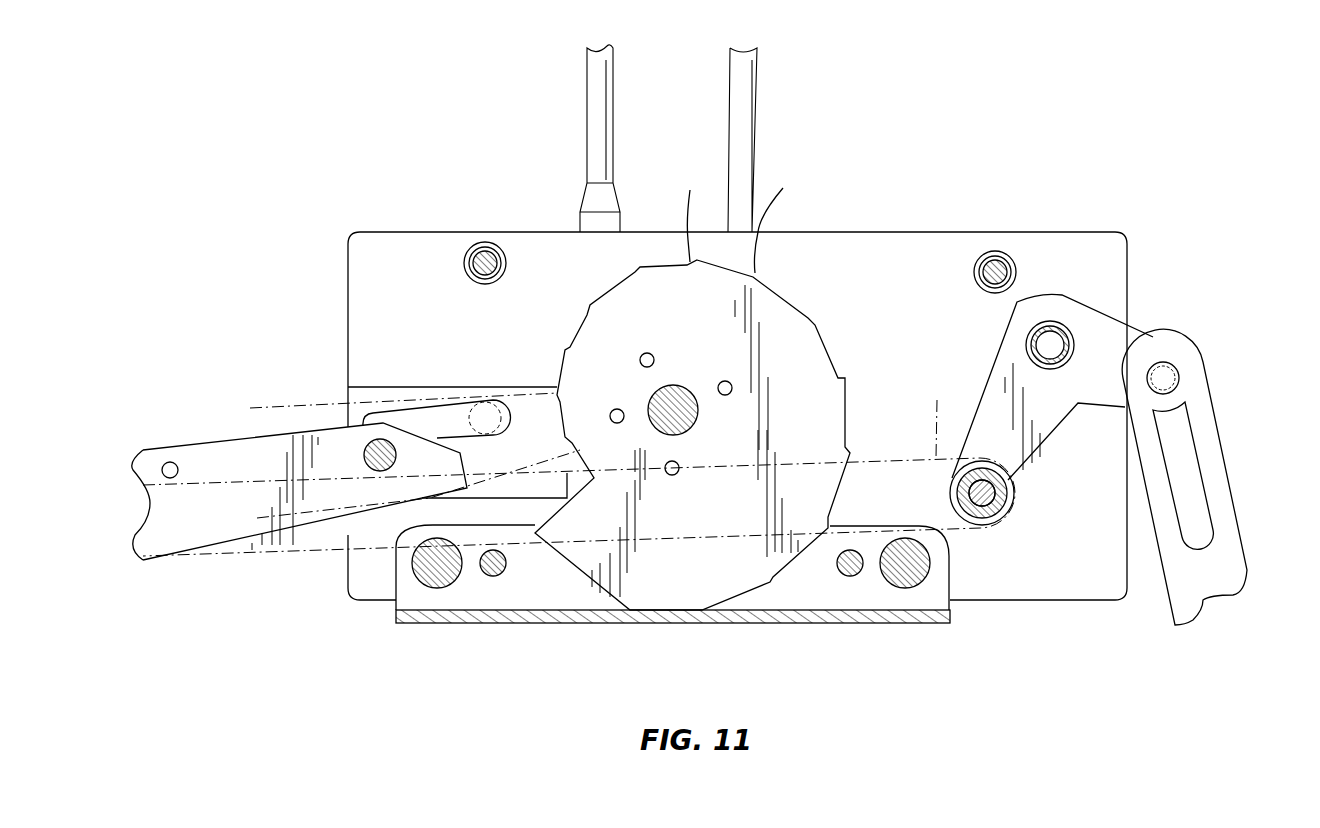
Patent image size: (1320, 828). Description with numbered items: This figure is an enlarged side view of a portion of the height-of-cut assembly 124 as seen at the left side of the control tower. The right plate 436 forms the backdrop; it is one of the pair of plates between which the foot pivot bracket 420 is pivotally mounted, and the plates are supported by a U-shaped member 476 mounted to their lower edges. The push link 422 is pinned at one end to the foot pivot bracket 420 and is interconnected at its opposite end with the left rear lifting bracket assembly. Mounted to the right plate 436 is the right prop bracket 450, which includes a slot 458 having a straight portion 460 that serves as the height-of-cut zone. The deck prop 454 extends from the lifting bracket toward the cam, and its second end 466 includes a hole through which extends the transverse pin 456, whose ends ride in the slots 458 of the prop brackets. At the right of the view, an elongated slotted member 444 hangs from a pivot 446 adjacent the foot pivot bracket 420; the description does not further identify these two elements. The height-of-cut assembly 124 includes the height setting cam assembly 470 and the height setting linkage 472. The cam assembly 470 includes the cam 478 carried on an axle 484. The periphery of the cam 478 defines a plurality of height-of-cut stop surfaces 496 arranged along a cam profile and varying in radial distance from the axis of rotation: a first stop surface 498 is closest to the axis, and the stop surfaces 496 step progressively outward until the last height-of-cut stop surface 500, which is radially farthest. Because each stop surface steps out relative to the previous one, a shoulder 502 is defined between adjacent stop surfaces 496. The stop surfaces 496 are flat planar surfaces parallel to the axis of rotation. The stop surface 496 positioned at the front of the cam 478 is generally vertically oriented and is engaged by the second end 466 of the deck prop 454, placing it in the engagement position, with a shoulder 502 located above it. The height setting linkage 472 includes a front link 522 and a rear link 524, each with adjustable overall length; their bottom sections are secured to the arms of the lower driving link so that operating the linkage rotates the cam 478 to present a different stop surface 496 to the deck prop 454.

The height-of-cut assembly 124 is at (450, 163).
The foot pivot bracket 420 is at (1050, 307).
The push link 422 is at (943, 414).
The right plate 436 is at (1098, 573).
The handle lever 444 is at (1185, 475).
The lever pivot pin 446 is at (1170, 382).
The right prop bracket 450 is at (542, 387).
The deck prop 454 is at (157, 455).
The transverse pin 456 is at (365, 450).
The slot 458 is at (432, 423).
The straight portion 460 is at (453, 420).
The second end 466 is at (388, 492).
The height setting cam assembly 470 is at (880, 662).
The height setting linkage 472 is at (540, 157).
The U-shaped member 476 is at (946, 625).
The cam 478 is at (665, 568).
The axle 484 is at (677, 398).
The height-of-cut stop surfaces 496 is at (848, 422).
The first stop surface 498 is at (552, 520).
The last height-of-cut stop surface 500 is at (793, 558).
The shoulder 502 is at (741, 218).
The front link 522 is at (590, 88).
The rear link 524 is at (747, 90).